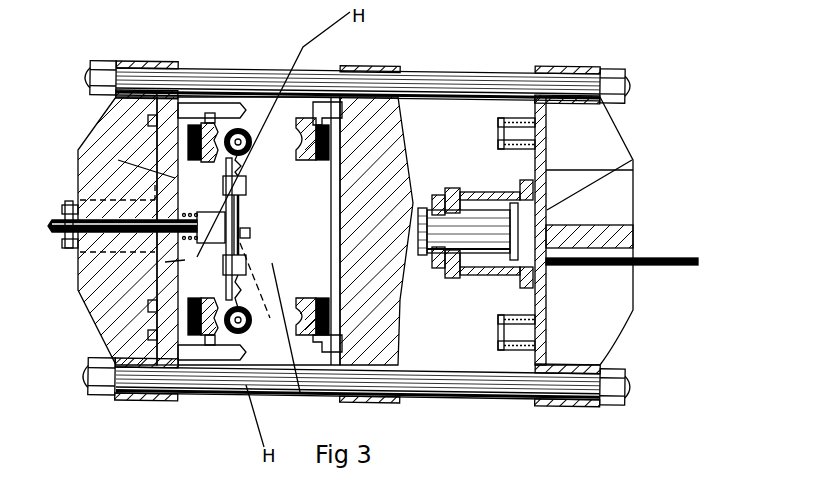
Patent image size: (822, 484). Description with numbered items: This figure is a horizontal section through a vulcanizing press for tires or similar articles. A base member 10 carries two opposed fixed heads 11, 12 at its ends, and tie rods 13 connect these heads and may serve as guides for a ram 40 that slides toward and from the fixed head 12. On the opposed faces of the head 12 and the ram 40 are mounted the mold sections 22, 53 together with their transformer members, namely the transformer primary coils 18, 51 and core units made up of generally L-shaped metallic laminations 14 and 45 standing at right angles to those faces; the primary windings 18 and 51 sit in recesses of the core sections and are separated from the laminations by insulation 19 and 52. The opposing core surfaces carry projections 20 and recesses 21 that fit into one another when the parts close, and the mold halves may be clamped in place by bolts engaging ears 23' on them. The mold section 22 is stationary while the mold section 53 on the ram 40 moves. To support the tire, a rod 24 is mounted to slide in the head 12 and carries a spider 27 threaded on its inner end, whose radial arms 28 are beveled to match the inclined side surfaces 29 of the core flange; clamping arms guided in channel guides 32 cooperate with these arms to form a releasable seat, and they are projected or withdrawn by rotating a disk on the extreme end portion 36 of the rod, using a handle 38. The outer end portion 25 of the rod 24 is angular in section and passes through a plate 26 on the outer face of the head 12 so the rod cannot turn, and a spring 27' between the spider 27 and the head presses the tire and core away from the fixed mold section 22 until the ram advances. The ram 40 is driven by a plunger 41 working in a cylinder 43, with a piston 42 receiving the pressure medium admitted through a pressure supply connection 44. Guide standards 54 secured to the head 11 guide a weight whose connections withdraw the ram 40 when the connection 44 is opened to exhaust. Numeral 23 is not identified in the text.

The base member 10 is at (478, 335).
The fixed head 11 is at (595, 208).
The fixed head 12 is at (110, 318).
The tie rods 13 is at (447, 98).
The metallic laminations 14 is at (215, 108).
The transformer primary coil 18 is at (195, 125).
The insulation 19 is at (207, 123).
The projections 20 is at (243, 132).
The recesses 21 is at (118, 160).
The mold section 22 is at (208, 345).
The bolt 23 is at (136, 360).
The ears 23' is at (167, 264).
The rod 24 is at (187, 250).
The outer end portion of the rod 25 is at (55, 229).
The plate 26 is at (67, 205).
The spider 27 is at (258, 229).
The spring 27' is at (113, 289).
The radial arms 28 is at (150, 332).
The inclined side surfaces 29 is at (262, 318).
The channel guides 32 is at (242, 185).
The extreme end portion of the rod 36 is at (250, 233).
The handle 38 is at (298, 381).
The ram 40 is at (398, 165).
The plunger 41 is at (475, 232).
The piston 42 is at (514, 220).
The cylinder 43 is at (547, 249).
The pressure supply connection 44 is at (668, 266).
The metallic laminations 45 is at (322, 110).
The transformer primary coil 51 is at (336, 140).
The insulation 52 is at (372, 120).
The mold section 53 is at (323, 125).
The guide standards 54 is at (512, 135).